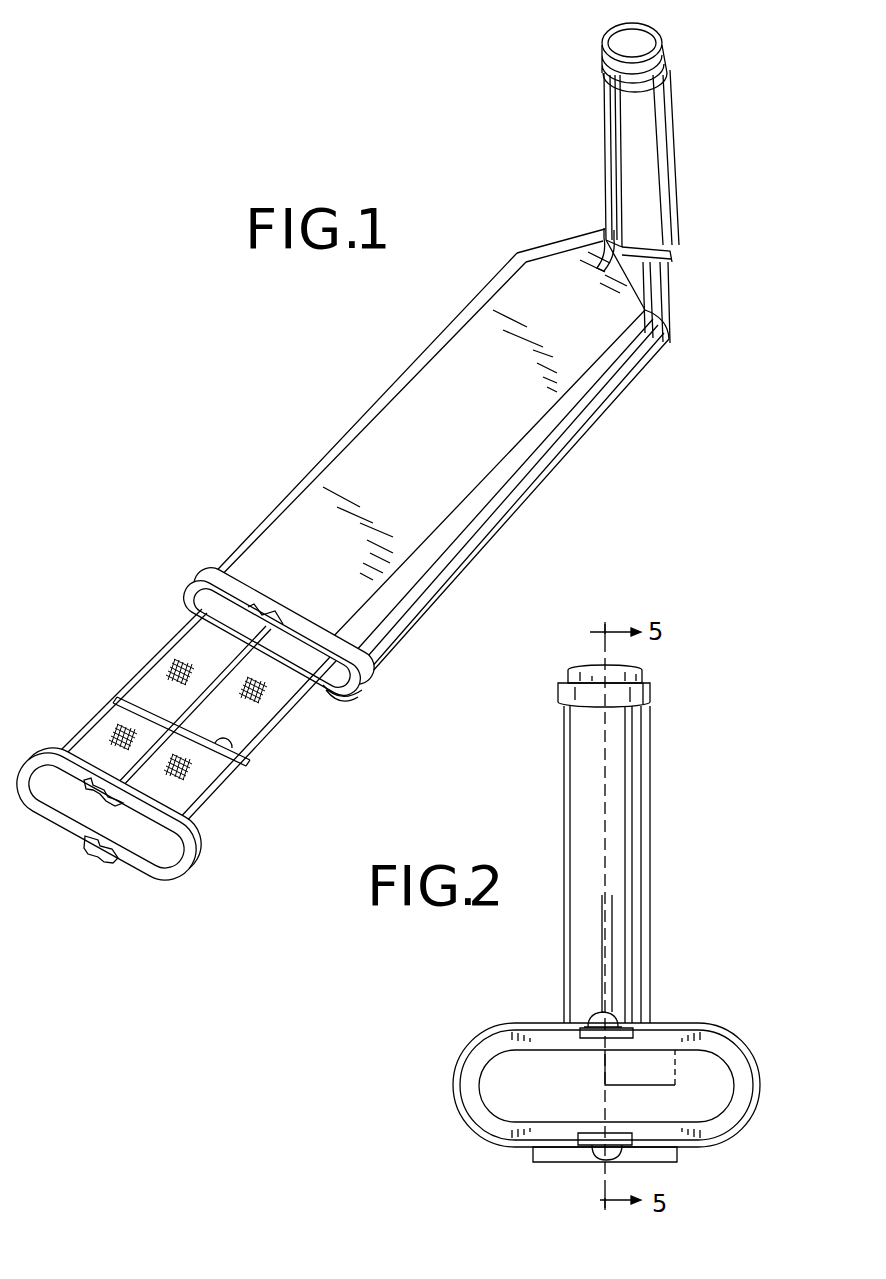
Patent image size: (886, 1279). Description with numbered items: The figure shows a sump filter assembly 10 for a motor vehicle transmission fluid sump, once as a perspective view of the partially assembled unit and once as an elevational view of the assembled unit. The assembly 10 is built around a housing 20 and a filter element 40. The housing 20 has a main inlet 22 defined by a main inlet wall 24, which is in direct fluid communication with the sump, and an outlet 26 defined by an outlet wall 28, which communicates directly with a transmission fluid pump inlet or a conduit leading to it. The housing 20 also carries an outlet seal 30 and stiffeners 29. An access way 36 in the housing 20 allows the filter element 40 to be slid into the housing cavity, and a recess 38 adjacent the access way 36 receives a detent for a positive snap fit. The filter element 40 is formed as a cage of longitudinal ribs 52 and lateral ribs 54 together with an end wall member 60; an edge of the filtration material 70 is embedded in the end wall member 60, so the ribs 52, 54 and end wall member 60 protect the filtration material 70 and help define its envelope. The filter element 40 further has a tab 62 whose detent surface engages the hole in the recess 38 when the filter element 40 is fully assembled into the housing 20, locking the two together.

In FIG. 1, the sump filter assembly 10 is at (603, 458).
In FIG. 2, the sump filter assembly 10 is at (526, 814).
In FIG. 1, the housing 20 is at (357, 415).
In FIG. 2, the main inlet 22 is at (560, 1162).
In FIG. 2, the main inlet wall 24 is at (532, 1152).
In FIG. 1, the outlet 26 is at (648, 44).
In FIG. 2, the outlet 26 is at (590, 668).
In FIG. 1, the outlet wall 28 is at (655, 119).
In FIG. 2, the outlet wall 28 is at (565, 766).
In FIG. 1, the stiffeners 29 is at (605, 183).
In FIG. 2, the stiffeners 29 is at (614, 935).
In FIG. 1, the outlet seal 30 is at (604, 67).
In FIG. 2, the outlet seal 30 is at (562, 697).
In FIG. 1, the access way 36 is at (198, 595).
In FIG. 1, the recess 38 is at (343, 700).
In FIG. 1, the filter element 40 is at (191, 717).
In FIG. 1, the longitudinal ribs 52 is at (83, 735).
In FIG. 1, the lateral ribs 54 is at (227, 741).
In FIG. 1, the end wall member 60 is at (53, 787).
In FIG. 2, the end wall member 60 is at (705, 1068).
In FIG. 1, the tab 62 is at (93, 798).
In FIG. 2, the tab 62 is at (612, 1022).
In FIG. 1, the filtration material 70 is at (263, 707).